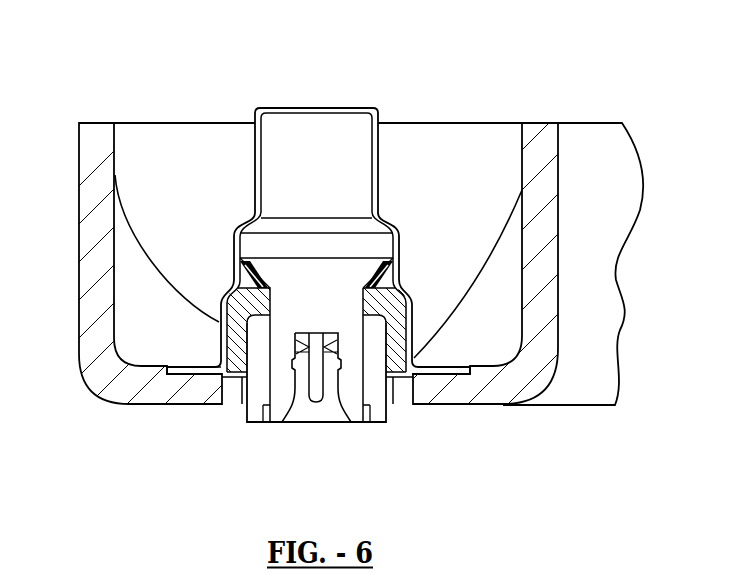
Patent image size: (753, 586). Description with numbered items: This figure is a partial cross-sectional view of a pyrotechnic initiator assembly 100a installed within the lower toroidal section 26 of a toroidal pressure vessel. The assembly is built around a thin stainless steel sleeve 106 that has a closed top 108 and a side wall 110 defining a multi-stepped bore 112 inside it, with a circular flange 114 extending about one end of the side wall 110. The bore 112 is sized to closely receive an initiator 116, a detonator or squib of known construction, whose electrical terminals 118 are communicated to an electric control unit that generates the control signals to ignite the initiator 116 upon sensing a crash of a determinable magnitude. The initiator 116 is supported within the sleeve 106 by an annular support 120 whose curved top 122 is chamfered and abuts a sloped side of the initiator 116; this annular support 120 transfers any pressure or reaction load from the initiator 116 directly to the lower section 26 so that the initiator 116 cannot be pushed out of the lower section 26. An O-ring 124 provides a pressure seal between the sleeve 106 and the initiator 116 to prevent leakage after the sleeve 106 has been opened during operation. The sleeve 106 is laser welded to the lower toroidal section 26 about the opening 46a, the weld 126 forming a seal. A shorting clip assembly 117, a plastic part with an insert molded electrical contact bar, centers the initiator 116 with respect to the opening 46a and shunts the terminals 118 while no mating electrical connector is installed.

The lower toroidal section 26 is at (598, 409).
The opening 46a is at (241, 379).
The initiator assembly 100a is at (292, 416).
The sleeve 106 is at (318, 192).
The closed top 108 is at (318, 112).
The side wall 110 is at (253, 198).
The multi-stepped bore 112 is at (366, 153).
The circular flange 114 is at (187, 365).
The initiator 116 is at (292, 150).
The shorting clip assembly 117 is at (257, 382).
The electrical terminals 118 is at (315, 393).
The annular support 120 is at (405, 386).
The curved top 122 is at (388, 302).
The O-ring 124 is at (402, 277).
The weld 126 is at (432, 367).